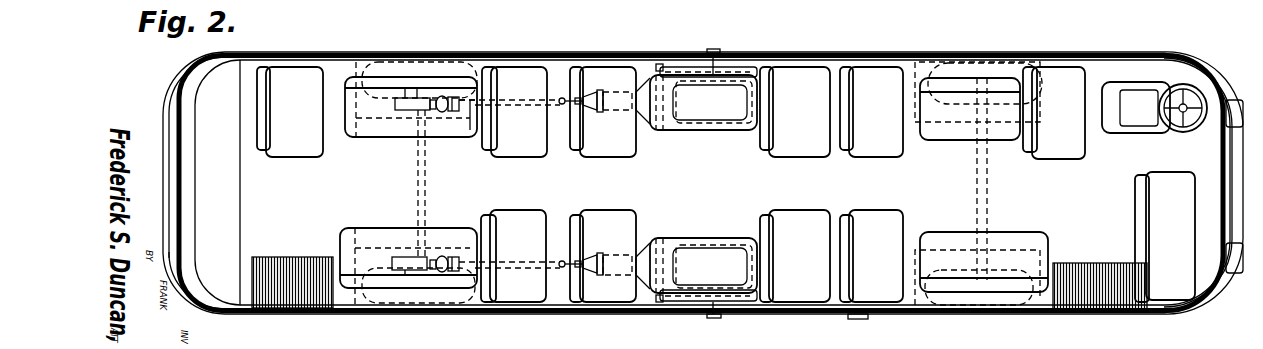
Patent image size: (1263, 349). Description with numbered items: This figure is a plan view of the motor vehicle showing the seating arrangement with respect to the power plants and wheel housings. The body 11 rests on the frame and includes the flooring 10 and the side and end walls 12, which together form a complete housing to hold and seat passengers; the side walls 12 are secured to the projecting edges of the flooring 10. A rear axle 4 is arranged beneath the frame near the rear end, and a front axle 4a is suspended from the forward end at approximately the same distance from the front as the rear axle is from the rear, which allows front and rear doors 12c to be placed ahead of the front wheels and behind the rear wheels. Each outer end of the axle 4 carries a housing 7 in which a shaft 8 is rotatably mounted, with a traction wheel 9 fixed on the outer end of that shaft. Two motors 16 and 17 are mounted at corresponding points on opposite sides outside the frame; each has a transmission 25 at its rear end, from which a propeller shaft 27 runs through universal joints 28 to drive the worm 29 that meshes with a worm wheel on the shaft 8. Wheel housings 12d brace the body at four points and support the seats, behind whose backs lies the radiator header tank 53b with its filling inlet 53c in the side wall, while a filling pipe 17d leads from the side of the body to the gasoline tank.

The side and end walls 12 is at (172, 184).
The front and rear doors 12c is at (308, 300).
The wheel housing 12d is at (390, 106).
The traction wheel 9 is at (420, 63).
The housing 7 is at (398, 110).
The worm 29 is at (447, 113).
The axle 4 is at (415, 175).
The front axle 4a is at (989, 197).
The universal joints 28 is at (462, 108).
The propeller shaft 27 is at (470, 118).
The shaft 8 is at (556, 98).
The change speed gearing or transmission 25 is at (620, 111).
The motor 16 is at (702, 122).
The motor 17 is at (701, 250).
The header tank 53b is at (663, 63).
The filling inlet 53c is at (716, 50).
The body 11 is at (822, 57).
The filling pipe 17d is at (860, 320).
The flooring 10 is at (724, 183).